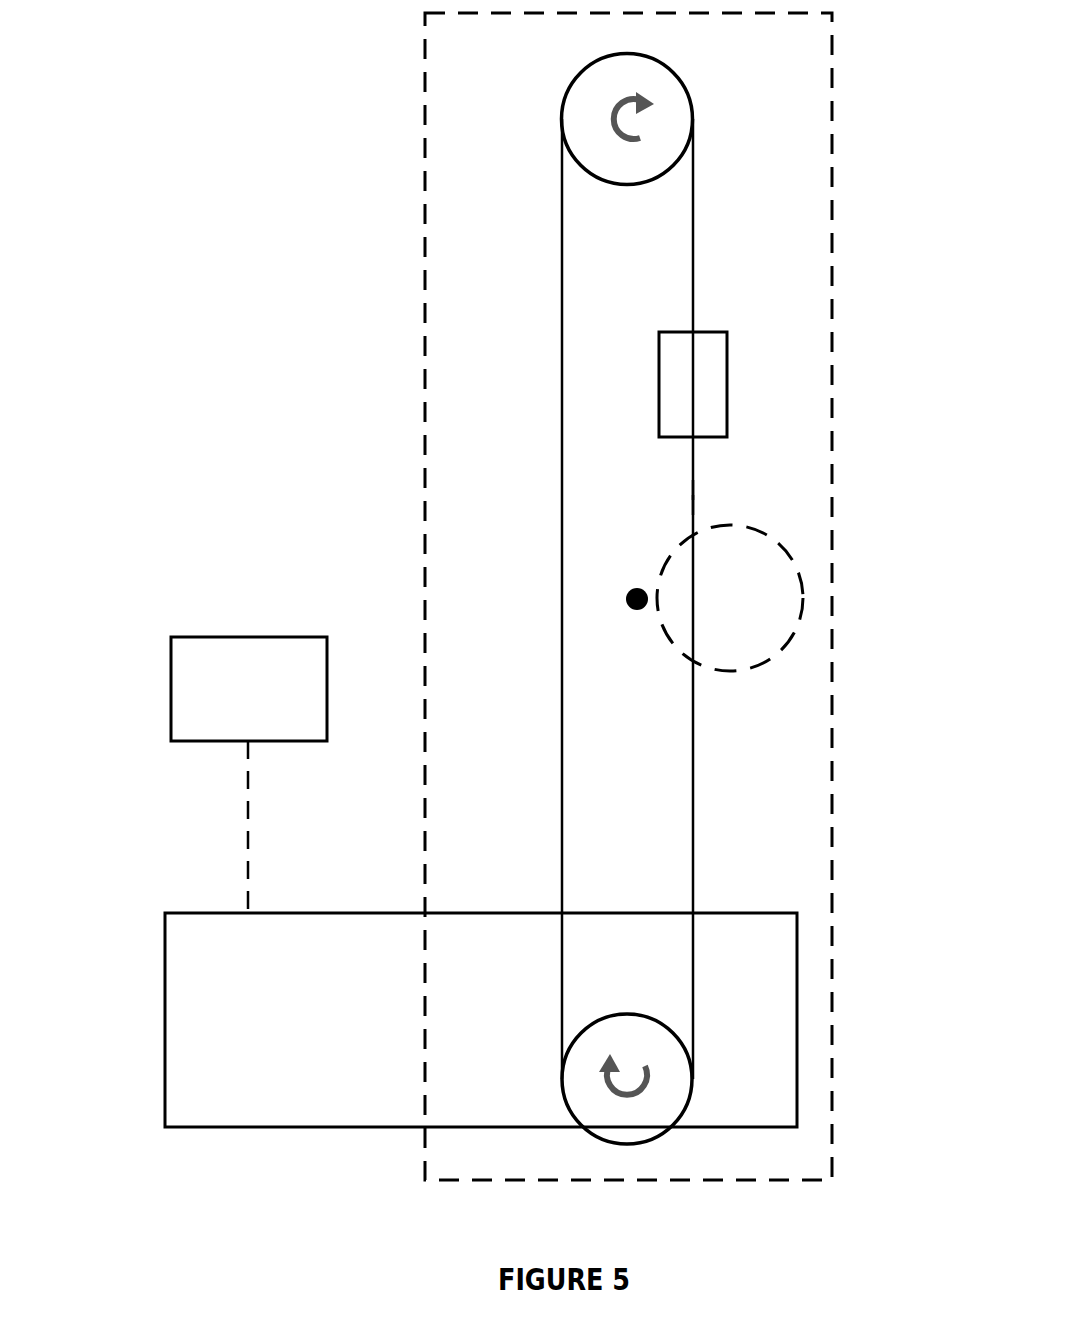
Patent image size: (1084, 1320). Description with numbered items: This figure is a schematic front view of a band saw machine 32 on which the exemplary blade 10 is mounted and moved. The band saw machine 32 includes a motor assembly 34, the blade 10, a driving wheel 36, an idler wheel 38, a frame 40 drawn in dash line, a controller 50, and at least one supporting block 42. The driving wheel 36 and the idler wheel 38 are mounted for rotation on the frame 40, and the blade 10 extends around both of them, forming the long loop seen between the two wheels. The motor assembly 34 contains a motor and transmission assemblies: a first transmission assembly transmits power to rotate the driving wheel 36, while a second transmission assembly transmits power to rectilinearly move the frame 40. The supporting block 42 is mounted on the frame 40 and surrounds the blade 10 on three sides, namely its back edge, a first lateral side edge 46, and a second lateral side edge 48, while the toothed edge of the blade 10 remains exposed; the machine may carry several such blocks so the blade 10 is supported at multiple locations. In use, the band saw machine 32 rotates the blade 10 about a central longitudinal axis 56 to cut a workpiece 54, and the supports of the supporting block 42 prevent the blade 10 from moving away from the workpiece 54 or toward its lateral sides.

The blade 10 is at (693, 258).
The band saw machine 32 is at (190, 142).
The motor assembly 34 is at (481, 1020).
The driving wheel 36 is at (633, 1035).
The idler wheel 38 is at (663, 107).
The frame 40 is at (832, 148).
The supporting block 42 is at (765, 358).
The first lateral side edge 46 is at (693, 502).
The second lateral side edge 48 is at (693, 493).
The controller 50 is at (249, 774).
The workpiece 54 is at (782, 652).
The central longitudinal axis 56 is at (632, 597).